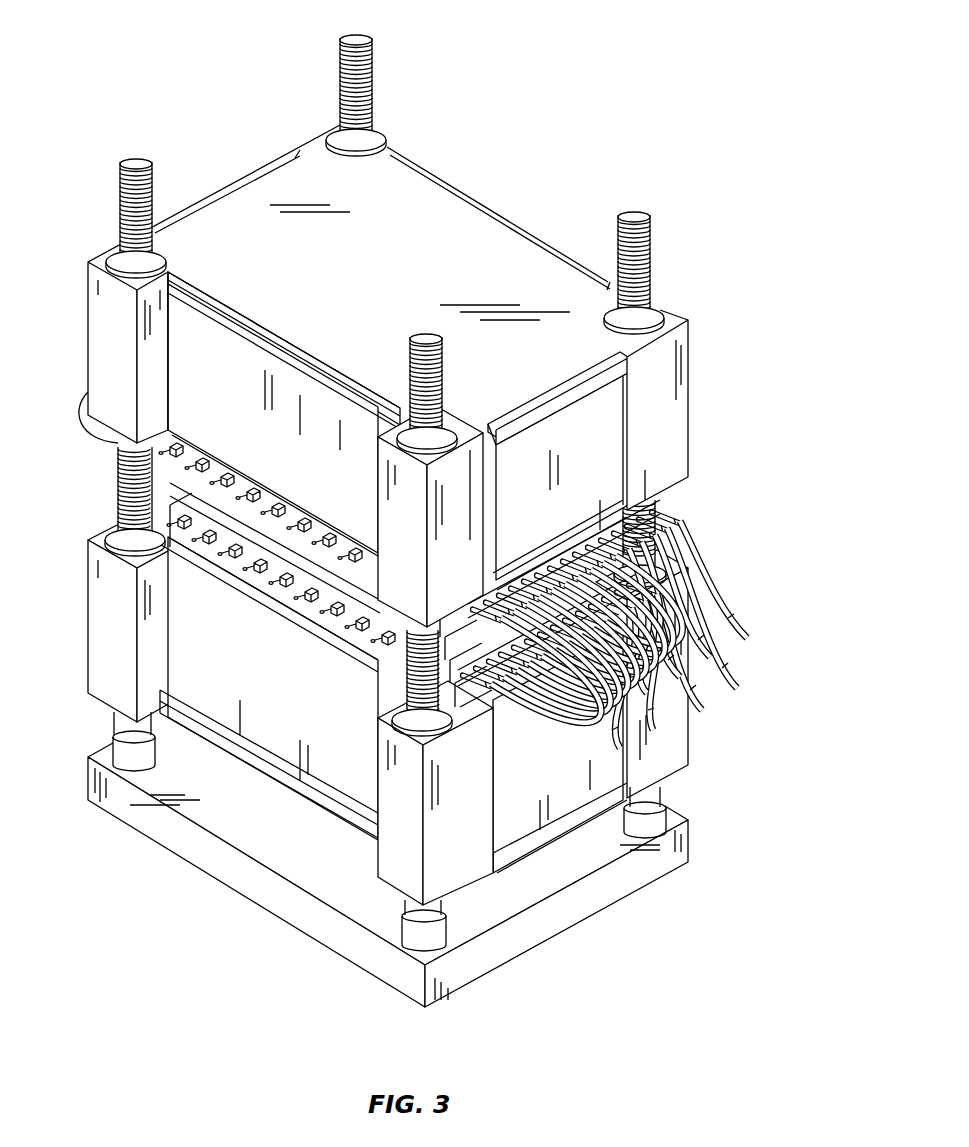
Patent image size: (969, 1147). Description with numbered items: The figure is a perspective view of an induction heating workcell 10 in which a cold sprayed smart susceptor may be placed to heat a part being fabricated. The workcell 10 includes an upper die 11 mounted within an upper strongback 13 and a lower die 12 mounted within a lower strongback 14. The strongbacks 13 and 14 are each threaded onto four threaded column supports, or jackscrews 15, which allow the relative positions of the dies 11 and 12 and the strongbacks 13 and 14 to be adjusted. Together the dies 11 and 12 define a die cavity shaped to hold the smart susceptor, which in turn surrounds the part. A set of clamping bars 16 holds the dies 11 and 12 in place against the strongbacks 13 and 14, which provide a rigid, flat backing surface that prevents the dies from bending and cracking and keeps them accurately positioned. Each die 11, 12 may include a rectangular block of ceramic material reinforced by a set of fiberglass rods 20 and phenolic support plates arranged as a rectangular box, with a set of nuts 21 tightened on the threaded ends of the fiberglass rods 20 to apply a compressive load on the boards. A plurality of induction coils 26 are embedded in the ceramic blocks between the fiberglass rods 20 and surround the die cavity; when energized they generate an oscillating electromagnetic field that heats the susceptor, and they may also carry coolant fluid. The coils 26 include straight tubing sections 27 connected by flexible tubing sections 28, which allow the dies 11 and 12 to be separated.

The workcell 10 is at (584, 104).
The upper die 11 is at (185, 492).
The lower die 12 is at (283, 598).
The upper strongback 13 is at (677, 412).
The lower strongback 14 is at (683, 728).
The jackscrews 15 is at (355, 40).
The clamping bars 16 is at (200, 556).
The fiberglass rods 20 is at (655, 530).
The nuts 21 is at (552, 572).
The induction coils 26 is at (644, 634).
The straight tubing sections 27 is at (663, 600).
The flexible tubing sections 28 is at (703, 625).